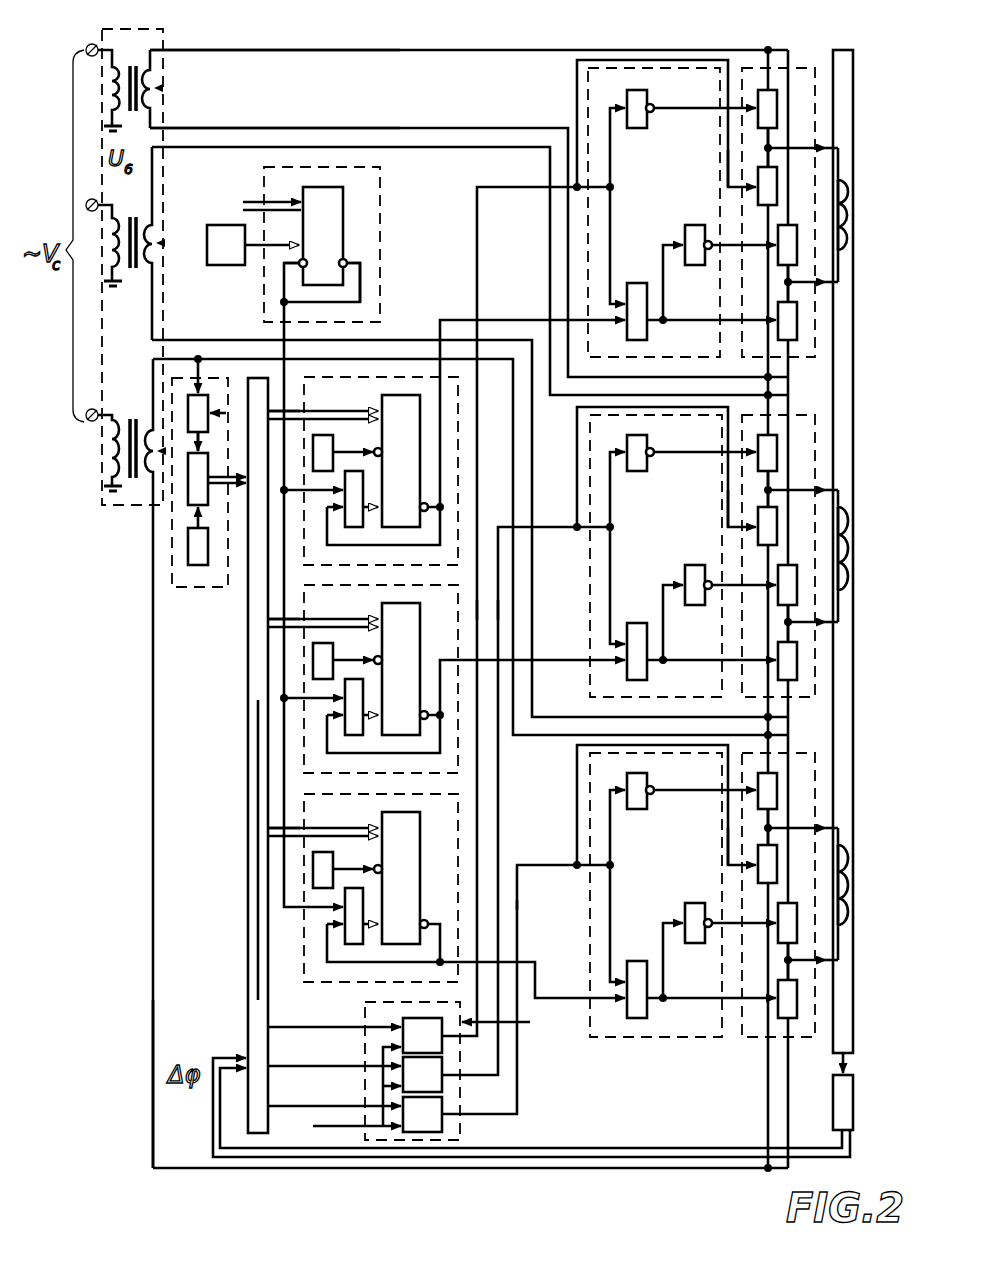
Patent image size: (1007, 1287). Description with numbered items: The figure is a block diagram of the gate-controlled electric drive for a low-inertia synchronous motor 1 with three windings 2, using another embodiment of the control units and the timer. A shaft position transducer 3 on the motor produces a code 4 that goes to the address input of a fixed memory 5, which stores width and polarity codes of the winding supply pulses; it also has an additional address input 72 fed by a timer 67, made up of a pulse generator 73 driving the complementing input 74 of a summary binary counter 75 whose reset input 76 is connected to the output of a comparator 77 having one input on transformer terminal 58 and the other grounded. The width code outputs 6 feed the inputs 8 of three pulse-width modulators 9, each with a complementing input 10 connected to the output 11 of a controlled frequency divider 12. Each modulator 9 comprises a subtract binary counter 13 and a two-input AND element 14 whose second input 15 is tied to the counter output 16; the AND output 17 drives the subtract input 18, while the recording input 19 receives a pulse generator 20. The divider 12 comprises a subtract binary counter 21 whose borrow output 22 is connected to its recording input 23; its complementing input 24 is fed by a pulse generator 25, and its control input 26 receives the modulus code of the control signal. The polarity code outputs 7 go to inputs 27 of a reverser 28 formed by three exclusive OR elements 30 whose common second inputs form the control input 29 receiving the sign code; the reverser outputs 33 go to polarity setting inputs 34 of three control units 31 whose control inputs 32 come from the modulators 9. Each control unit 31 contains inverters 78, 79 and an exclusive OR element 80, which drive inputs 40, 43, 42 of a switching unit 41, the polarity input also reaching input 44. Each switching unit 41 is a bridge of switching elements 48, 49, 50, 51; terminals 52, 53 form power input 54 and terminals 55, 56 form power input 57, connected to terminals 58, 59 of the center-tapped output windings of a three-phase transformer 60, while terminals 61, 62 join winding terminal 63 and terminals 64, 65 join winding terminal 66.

The synchronous motor 1 is at (856, 1018).
The winding 2 is at (850, 196).
The shaft position transducer 3 is at (832, 1120).
The code Δφ 4 is at (246, 1058).
The fixed memory 5 is at (250, 778).
The width code setting output 6 is at (277, 409).
The polarity code setting output 7 is at (276, 1026).
The input of pulse-width modulator 8 is at (323, 433).
The pulse-width modulator 9 is at (412, 374).
The complementing input 10 is at (284, 486).
The output of controlled frequency divider 11 is at (284, 320).
The controlled frequency divider 12 is at (330, 165).
The subtract binary counter 13 is at (401, 669).
The two-input AND element 14 is at (350, 524).
The second input of AND element 15 is at (336, 505).
The output of counter 16 is at (428, 506).
The output of AND element 17 is at (370, 495).
The subtract input of counter 18 is at (374, 512).
The recording input of counter 19 is at (376, 448).
The pulse generator 20 is at (312, 652).
The subtract binary counter 21 is at (320, 246).
The borrow output 22 is at (348, 265).
The recording input 23 is at (296, 268).
The complementing input of controlled frequency divider 24 is at (298, 245).
The pulse generator 25 is at (226, 245).
The control input of controlled frequency divider 26 is at (298, 200).
The input of reverser 27 is at (365, 1022).
The reverser 28 is at (510, 1022).
The control input of reverser 29 is at (360, 1130).
The exclusive OR element 30 is at (455, 1055).
The control unit 31 is at (660, 66).
The control input of control unit 32 is at (610, 320).
The output of reverser 33 is at (460, 1038).
The polarity setting input 34 is at (575, 186).
The input of switching unit 40 is at (745, 245).
The switching unit 41 is at (800, 66).
The input of switching unit 42 is at (760, 323).
The input of switching unit 43 is at (745, 106).
The input of switching unit 44 is at (726, 205).
The switching element 48 is at (778, 108).
The switching element 49 is at (778, 178).
The switching element 50 is at (800, 256).
The switching element 51 is at (798, 332).
The terminal of switching element 48 52 is at (766, 48).
The terminal of switching element 50 53 is at (835, 212).
The power input of switching unit 54 is at (740, 48).
The terminal of switching element 49 55 is at (800, 215).
The terminal of switching element 51 56 is at (800, 372).
The power input of switching unit 57 is at (738, 376).
The terminal of transformer output winding 58 is at (157, 48).
The terminal of transformer output winding 59 is at (160, 127).
The three-phase transformer 60 is at (166, 82).
The terminal of switching element 48 61 is at (766, 148).
The terminal of switching element 49 62 is at (756, 157).
The terminal of winding 63 is at (826, 152).
The terminal of switching element 50 64 is at (786, 272).
The terminal of switching element 51 65 is at (786, 292).
The terminal of winding 66 is at (815, 288).
The timer 67 is at (210, 590).
The additional address input 72 is at (230, 472).
The pulse generator 73 is at (188, 552).
The complementing input 74 is at (190, 513).
The summary binary counter 75 is at (188, 497).
The reset input 76 is at (188, 457).
The comparator 77 is at (188, 408).
The inverter 78 is at (684, 232).
The inverter 79 is at (626, 98).
The exclusive OR element 80 is at (646, 268).